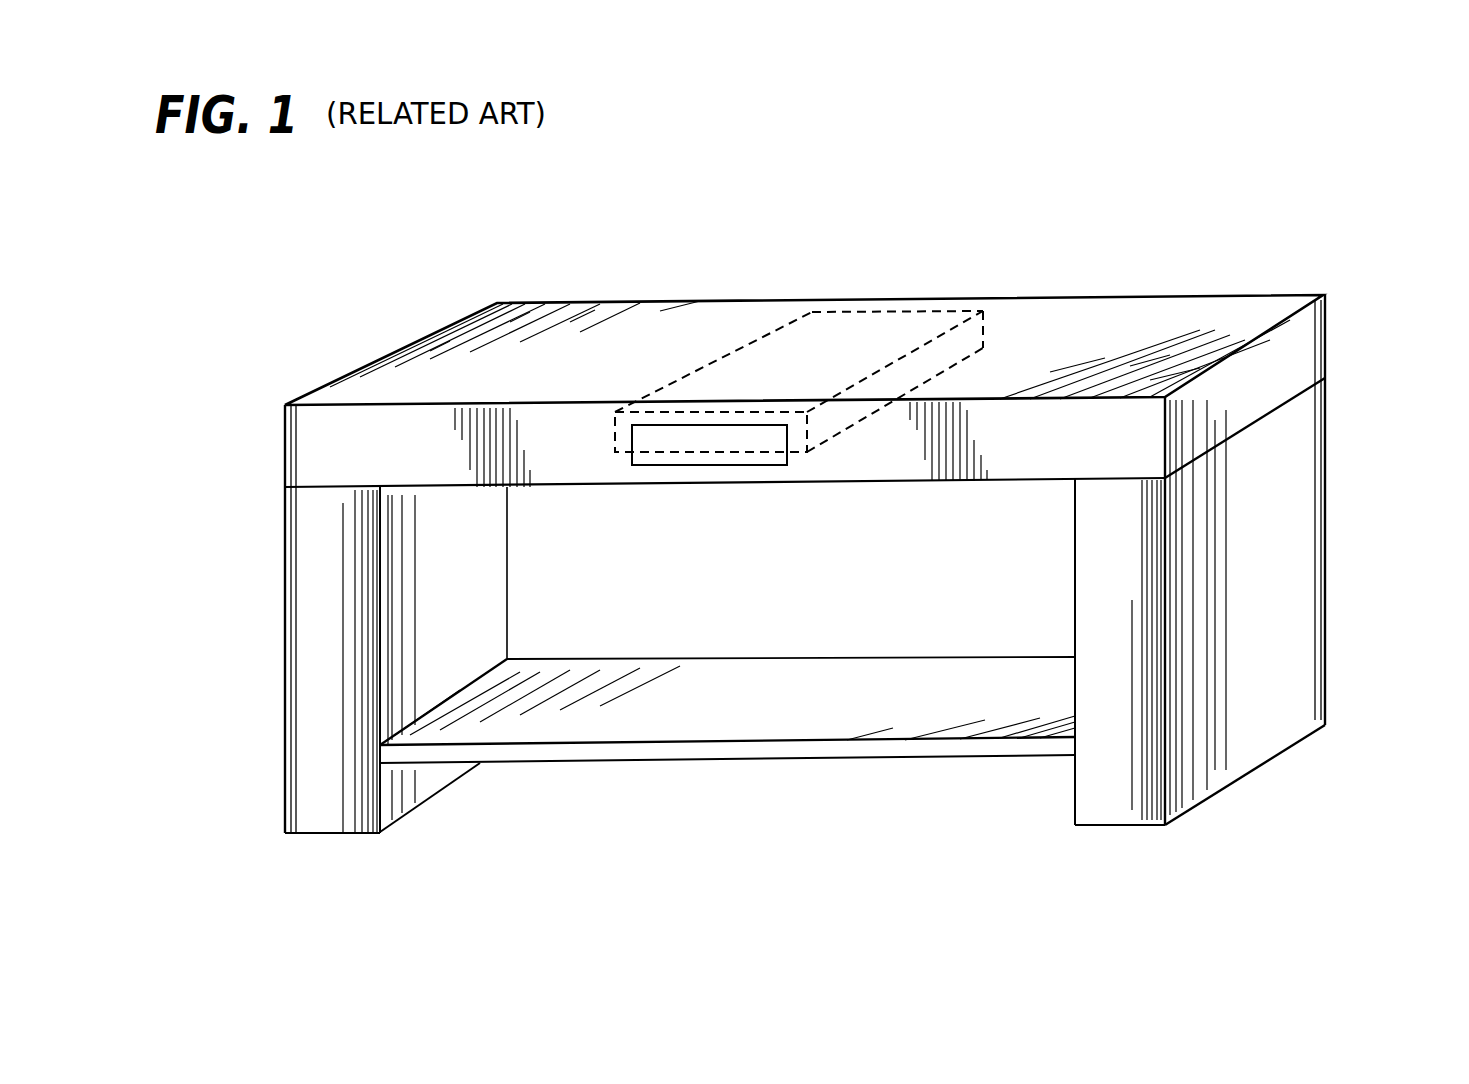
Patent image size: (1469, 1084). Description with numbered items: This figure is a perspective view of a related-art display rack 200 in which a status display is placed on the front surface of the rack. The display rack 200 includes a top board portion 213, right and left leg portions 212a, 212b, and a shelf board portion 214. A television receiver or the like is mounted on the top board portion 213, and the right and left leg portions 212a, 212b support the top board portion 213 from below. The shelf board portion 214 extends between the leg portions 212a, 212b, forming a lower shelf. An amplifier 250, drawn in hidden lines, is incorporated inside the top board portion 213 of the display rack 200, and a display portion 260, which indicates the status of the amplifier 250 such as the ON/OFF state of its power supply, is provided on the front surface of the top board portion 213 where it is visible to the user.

The display rack 200 is at (355, 213).
The top board portion 213 is at (298, 442).
The left leg portion 212a is at (298, 600).
The right leg portion 212b is at (1302, 518).
The shelf board portion 214 is at (930, 675).
The amplifier 250 is at (880, 310).
The display portion 260 is at (722, 453).